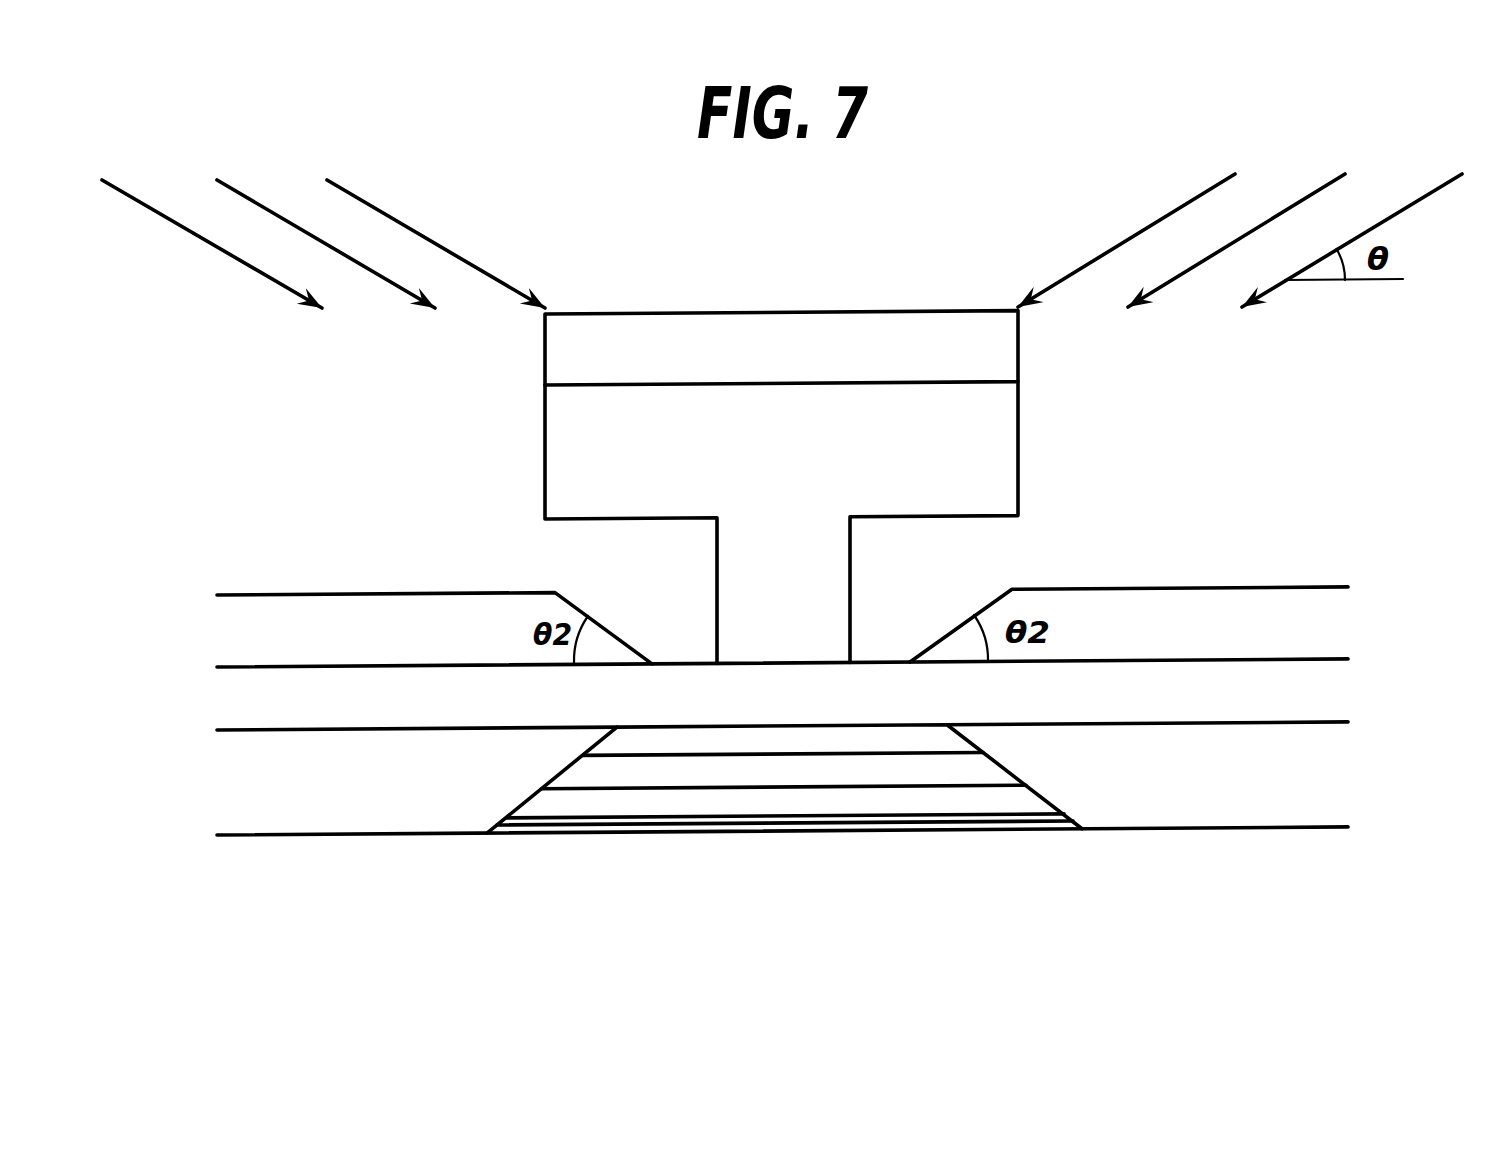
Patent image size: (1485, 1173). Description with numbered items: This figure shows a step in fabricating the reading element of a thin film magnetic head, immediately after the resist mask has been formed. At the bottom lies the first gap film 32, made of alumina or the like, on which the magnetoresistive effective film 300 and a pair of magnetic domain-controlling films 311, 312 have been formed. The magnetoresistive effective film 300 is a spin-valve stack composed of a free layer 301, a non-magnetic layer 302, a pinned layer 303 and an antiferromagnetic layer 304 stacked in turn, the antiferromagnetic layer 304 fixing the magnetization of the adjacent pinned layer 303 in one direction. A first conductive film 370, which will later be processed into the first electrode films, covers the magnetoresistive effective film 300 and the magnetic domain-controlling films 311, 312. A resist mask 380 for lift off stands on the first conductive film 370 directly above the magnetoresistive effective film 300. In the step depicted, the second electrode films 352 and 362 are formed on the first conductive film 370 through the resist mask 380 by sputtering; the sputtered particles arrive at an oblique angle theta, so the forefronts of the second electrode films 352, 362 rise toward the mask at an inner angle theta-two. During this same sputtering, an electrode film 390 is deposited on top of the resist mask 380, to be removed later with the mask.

The first gap film 32 is at (237, 878).
The magnetoresistive effective film 300 is at (946, 843).
The free layer 301 is at (890, 740).
The non-magnetic layer 302 is at (666, 772).
The pinned layer 303 is at (750, 798).
The antiferromagnetic layer 304 is at (585, 823).
The magnetic domain-controlling film 311 is at (232, 786).
The magnetic domain-controlling film 312 is at (1290, 782).
The second electrode film 352 is at (237, 635).
The second electrode film 362 is at (1310, 627).
The first conductive film 370 is at (237, 698).
The resist mask 380 is at (555, 460).
The electrode film 390 is at (788, 327).